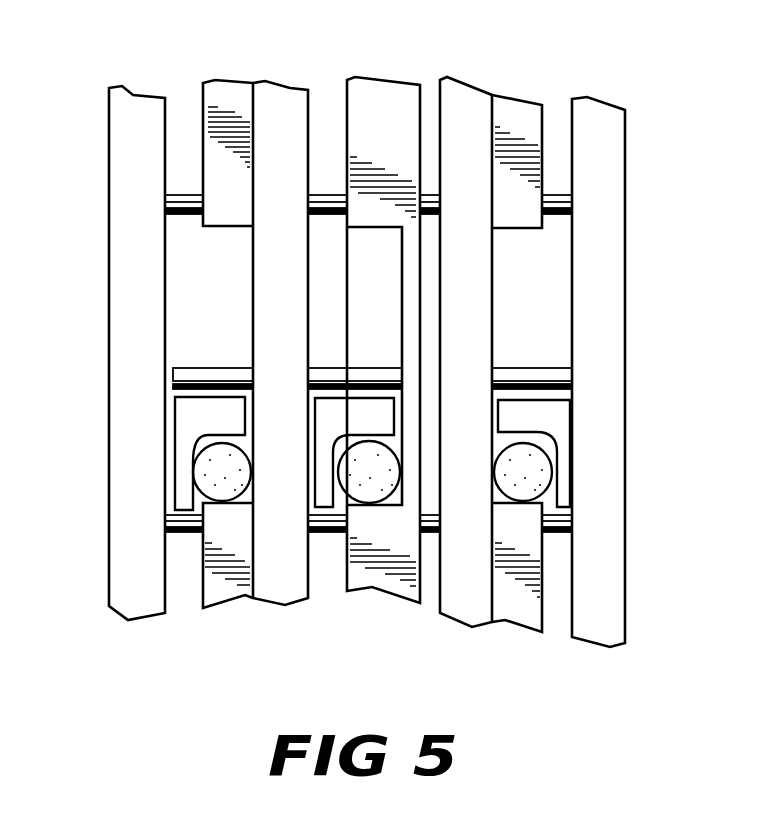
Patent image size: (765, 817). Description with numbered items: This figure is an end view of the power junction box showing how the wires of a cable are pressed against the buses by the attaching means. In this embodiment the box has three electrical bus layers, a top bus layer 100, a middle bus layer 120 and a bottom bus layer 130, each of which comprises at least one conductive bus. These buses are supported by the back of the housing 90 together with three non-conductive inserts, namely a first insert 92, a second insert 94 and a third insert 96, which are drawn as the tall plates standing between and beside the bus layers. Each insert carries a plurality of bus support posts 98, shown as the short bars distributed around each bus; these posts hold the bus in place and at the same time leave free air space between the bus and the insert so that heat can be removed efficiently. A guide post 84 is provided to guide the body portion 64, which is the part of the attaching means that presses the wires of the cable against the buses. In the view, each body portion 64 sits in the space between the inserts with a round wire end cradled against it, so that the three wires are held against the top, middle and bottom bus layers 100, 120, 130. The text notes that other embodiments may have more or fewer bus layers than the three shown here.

The body portion 64 is at (193, 408).
The guide post 84 is at (207, 378).
The housing 90 is at (595, 110).
The first insert 92 is at (450, 88).
The second insert 94 is at (285, 95).
The third insert 96 is at (137, 100).
The bus support posts 98 is at (178, 216).
The top bus layer 100 is at (510, 110).
The middle bus layer 120 is at (372, 82).
The bottom bus layer 130 is at (227, 88).